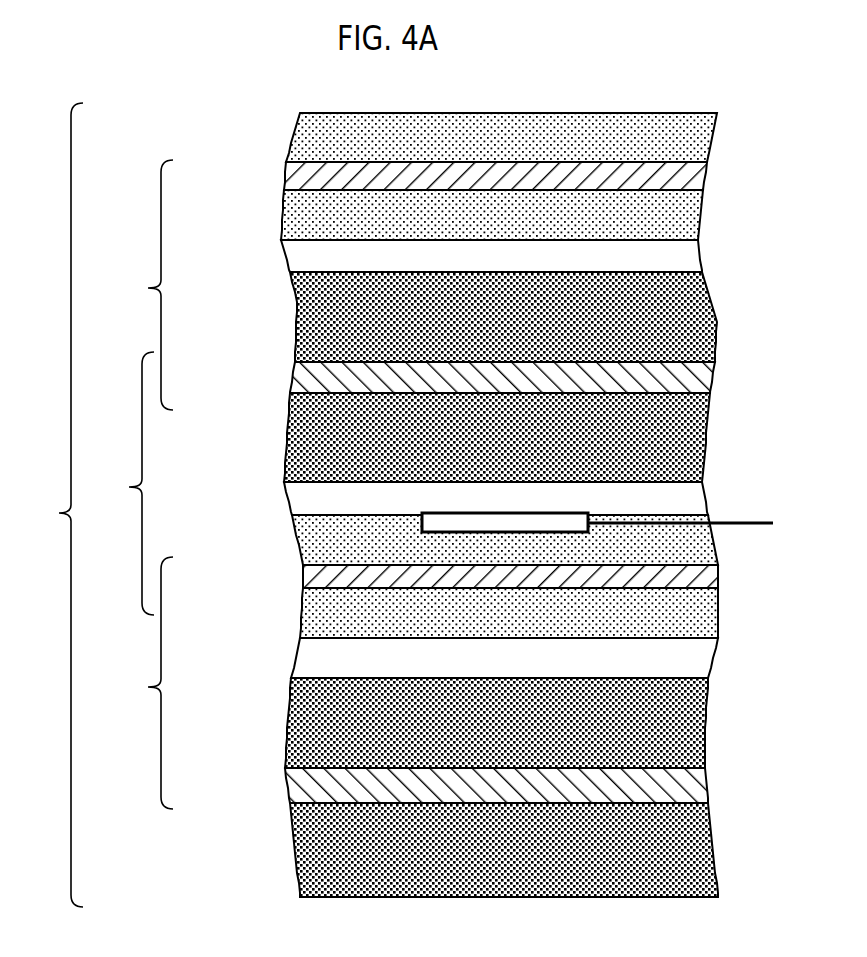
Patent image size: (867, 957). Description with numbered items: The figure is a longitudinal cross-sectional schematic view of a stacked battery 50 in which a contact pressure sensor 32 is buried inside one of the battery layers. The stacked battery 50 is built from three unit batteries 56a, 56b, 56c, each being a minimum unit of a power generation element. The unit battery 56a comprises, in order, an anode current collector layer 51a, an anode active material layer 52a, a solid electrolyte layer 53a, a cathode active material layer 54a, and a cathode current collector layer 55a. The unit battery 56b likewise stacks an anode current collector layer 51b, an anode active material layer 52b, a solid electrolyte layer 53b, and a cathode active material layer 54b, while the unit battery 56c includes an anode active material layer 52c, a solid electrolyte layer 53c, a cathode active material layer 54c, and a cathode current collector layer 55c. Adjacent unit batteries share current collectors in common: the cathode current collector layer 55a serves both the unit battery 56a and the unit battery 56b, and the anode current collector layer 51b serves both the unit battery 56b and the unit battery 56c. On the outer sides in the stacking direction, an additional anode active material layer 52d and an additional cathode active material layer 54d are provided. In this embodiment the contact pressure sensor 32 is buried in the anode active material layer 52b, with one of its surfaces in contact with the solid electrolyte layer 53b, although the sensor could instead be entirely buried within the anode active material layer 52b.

The stacked battery 50 is at (51, 505).
The anode current collector layer 51a is at (317, 177).
The anode current collector layer 51b is at (315, 578).
The anode active material layer 52a is at (315, 215).
The anode active material layer 52b is at (315, 533).
The anode active material layer 52c is at (315, 623).
The anode active material layer 52d is at (315, 138).
The solid electrolyte layer 53a is at (317, 252).
The solid electrolyte layer 53b is at (317, 498).
The solid electrolyte layer 53c is at (315, 665).
The cathode active material layer 54a is at (313, 310).
The cathode active material layer 54b is at (313, 445).
The cathode active material layer 54c is at (317, 727).
The cathode active material layer 54d is at (313, 860).
The cathode current collector layer 55a is at (315, 380).
The cathode current collector layer 55c is at (313, 792).
The unit battery 56a is at (134, 285).
The unit battery 56b is at (116, 483).
The unit battery 56c is at (134, 683).
The contact pressure sensor 32 is at (735, 526).